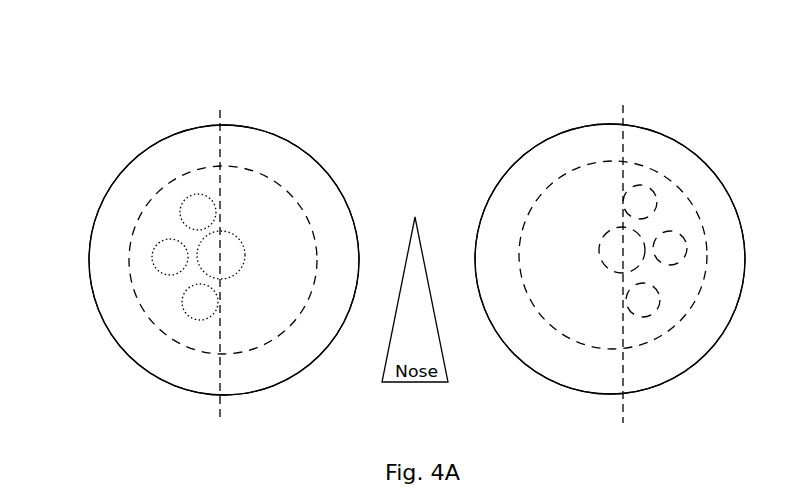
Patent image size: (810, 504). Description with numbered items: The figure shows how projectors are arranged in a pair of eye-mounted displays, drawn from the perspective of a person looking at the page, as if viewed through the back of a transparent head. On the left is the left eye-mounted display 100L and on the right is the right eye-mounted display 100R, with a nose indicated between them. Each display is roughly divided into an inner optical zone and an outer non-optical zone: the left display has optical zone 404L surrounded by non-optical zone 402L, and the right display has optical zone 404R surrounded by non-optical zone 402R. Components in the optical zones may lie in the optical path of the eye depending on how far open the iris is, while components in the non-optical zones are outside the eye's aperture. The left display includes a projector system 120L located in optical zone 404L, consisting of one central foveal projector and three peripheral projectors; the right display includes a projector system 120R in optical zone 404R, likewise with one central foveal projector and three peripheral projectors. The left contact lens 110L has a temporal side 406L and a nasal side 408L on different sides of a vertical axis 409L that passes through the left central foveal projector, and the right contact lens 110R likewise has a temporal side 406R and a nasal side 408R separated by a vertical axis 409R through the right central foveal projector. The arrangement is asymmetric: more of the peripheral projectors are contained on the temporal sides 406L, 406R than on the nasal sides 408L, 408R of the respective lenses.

The left eye-mounted display 100L is at (200, 86).
The right eye-mounted display 100R is at (602, 80).
The left contact lens 110L is at (110, 182).
The right contact lens 110R is at (700, 154).
The left projector system 120L is at (240, 239).
The right projector system 120R is at (599, 252).
The non-optical zone of the left eye-mounted display 402L is at (275, 162).
The non-optical zone of the right eye-mounted display 402R is at (537, 170).
The optical zone of the left eye 404L is at (290, 233).
The optical zone of the right eye 404R is at (542, 233).
The temporal side of the left contact lens 406L is at (173, 445).
The temporal side of the right contact lens 406R is at (720, 446).
The nasal side of the left contact lens 408L is at (295, 445).
The nasal side of the right contact lens 408R is at (594, 446).
The vertical axis of the left contact lens 409L is at (217, 118).
The vertical axis of the right contact lens 409R is at (624, 111).